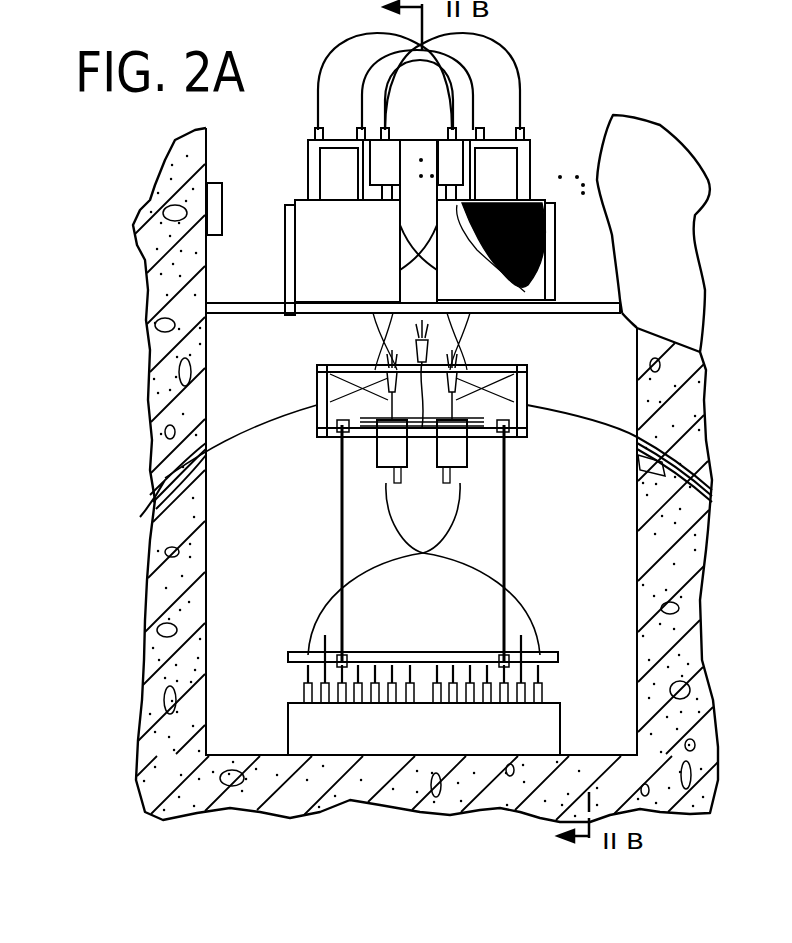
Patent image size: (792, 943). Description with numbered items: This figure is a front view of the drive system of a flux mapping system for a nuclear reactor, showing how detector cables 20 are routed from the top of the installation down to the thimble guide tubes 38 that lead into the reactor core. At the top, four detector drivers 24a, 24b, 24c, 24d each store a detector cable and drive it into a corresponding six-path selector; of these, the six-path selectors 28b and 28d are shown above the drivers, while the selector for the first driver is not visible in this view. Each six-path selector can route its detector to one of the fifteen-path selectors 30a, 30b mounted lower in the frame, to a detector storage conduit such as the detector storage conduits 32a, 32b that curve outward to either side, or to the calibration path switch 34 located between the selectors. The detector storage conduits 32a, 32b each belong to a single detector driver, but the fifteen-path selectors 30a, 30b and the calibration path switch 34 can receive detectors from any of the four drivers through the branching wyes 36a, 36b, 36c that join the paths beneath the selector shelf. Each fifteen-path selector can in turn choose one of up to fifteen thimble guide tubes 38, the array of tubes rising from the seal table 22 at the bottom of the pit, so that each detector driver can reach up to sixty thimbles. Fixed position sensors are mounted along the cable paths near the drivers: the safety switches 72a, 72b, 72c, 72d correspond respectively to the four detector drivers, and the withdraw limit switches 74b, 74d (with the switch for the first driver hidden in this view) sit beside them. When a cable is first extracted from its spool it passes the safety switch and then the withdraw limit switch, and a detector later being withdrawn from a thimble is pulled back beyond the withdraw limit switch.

The detector cables 20 is at (503, 52).
The seal table 22 is at (303, 728).
The detector driver 24a is at (295, 200).
The detector driver 24b is at (286, 278).
The detector driver 24c is at (536, 200).
The detector driver 24d is at (553, 269).
The 6-path selector 28b is at (528, 144).
The 6-path selector 28d is at (322, 160).
The 15-path selector 30a is at (388, 460).
The 15-path selector 30b is at (460, 460).
The detector storage conduit 32a is at (165, 479).
The detector storage conduit 32b is at (705, 471).
The calibration path switch 34 is at (424, 568).
The wye 36a is at (336, 423).
The wye 36b is at (432, 347).
The wye 36c is at (508, 423).
The thimble guide tubes 38 is at (302, 693).
The safety switch 72a is at (346, 128).
The safety switch 72b is at (314, 134).
The safety switch 72c is at (487, 128).
The safety switch 72d is at (527, 128).
The withdraw limit switch 74b is at (449, 128).
The withdraw limit switch 74d is at (390, 128).